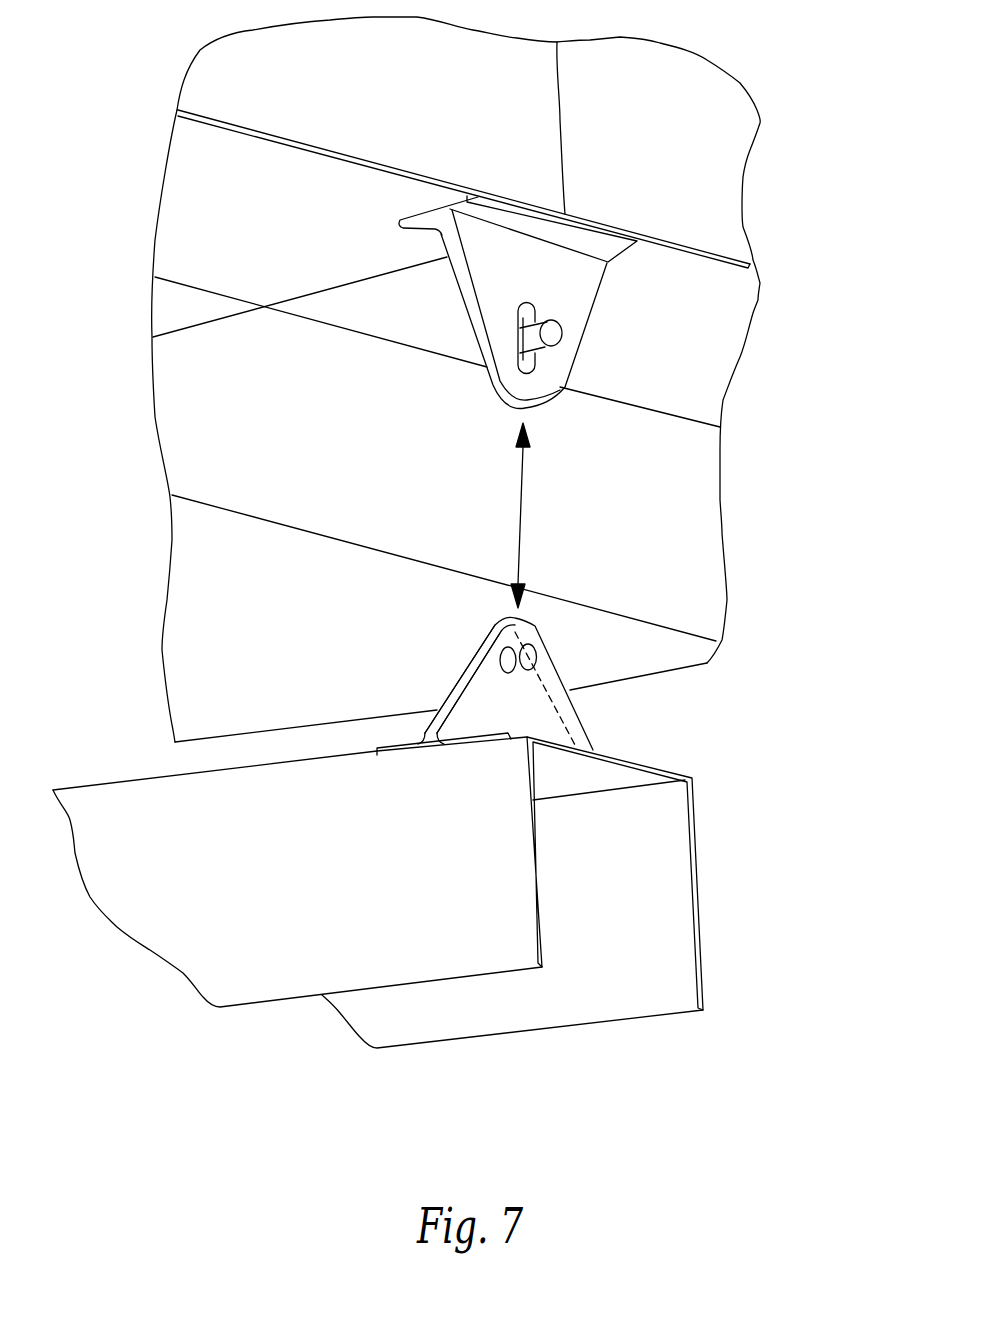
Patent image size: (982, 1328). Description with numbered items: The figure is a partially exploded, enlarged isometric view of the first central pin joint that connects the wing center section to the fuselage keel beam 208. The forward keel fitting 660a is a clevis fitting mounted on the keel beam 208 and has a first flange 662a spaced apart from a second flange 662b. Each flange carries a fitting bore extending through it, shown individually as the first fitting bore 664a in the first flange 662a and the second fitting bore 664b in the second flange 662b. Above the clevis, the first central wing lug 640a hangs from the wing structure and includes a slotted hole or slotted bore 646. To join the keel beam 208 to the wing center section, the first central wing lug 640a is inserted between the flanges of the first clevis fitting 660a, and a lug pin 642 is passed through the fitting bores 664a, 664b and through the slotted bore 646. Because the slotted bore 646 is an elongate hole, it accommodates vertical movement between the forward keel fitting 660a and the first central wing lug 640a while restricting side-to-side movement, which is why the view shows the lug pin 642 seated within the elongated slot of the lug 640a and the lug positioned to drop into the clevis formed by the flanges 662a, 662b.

The fuselage keel beam 208 is at (700, 906).
The first central wing lug 640a is at (473, 325).
The lug pin 642 is at (562, 337).
The slotted bore 646 is at (535, 310).
The forward keel fitting 660a is at (630, 732).
The first flange 662a is at (543, 708).
The second flange 662b is at (473, 650).
The first fitting bore 664a is at (540, 656).
The second fitting bore 664b is at (513, 633).